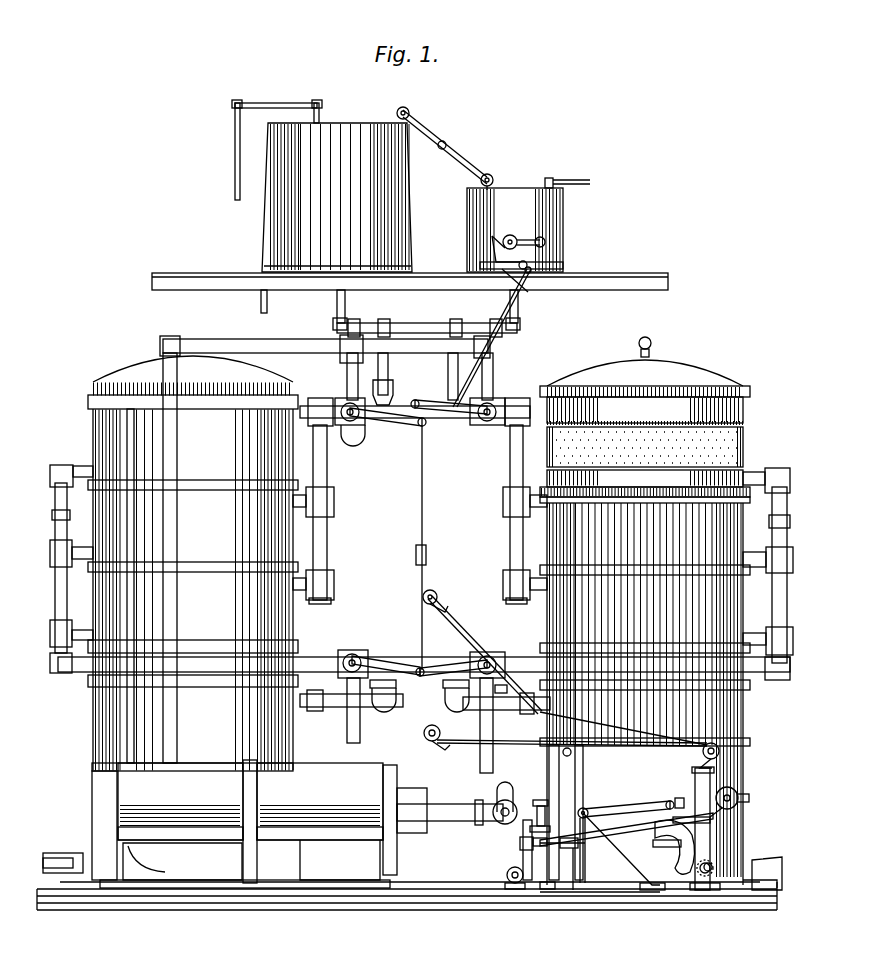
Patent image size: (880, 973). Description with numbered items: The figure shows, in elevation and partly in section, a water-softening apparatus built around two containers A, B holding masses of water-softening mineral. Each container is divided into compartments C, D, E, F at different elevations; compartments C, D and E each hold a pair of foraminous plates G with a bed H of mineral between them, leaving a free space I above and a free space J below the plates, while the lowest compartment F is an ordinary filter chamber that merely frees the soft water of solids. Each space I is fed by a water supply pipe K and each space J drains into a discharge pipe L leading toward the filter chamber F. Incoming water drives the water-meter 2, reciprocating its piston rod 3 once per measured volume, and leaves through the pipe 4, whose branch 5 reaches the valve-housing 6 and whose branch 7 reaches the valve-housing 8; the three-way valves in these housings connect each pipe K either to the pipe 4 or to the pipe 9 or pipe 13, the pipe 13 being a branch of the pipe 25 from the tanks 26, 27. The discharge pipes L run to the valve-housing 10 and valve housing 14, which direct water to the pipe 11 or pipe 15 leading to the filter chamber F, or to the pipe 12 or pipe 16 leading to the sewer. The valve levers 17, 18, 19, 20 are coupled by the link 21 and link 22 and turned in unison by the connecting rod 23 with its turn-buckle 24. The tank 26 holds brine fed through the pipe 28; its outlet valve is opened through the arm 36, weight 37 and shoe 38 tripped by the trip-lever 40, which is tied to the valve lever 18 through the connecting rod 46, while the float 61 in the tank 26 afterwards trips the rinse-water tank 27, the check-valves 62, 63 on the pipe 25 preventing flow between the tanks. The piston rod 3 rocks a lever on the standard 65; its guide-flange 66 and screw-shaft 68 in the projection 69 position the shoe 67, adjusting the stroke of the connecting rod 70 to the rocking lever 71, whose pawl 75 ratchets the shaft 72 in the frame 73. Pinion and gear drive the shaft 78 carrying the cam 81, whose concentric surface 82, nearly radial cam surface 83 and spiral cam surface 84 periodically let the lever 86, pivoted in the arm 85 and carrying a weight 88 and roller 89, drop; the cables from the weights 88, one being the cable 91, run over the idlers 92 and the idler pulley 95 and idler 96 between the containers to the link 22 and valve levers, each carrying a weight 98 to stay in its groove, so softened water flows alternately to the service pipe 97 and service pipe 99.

The water-meter 2 is at (248, 824).
The piston rod 3 is at (447, 822).
The pipe 4 is at (178, 722).
The branch 5 is at (346, 373).
The valve-housing 6 is at (360, 430).
The branch 7 is at (494, 385).
The valve-housing 8 is at (483, 426).
The pipe 9 is at (389, 380).
The valve-housing 10 is at (348, 655).
The pipe 11 is at (322, 708).
The pipe 12 is at (347, 735).
The pipe 13 is at (448, 370).
The valve housing 14 is at (502, 688).
The pipe 15 is at (510, 711).
The pipe 16 is at (480, 760).
The valve lever 17 is at (400, 419).
The valve lever 18 is at (436, 412).
The valve lever 19 is at (372, 660).
The valve lever 20 is at (434, 660).
The link 21 is at (415, 401).
The link 22 is at (350, 440).
The connecting rod 23 is at (423, 496).
The turn-buckle 24 is at (426, 557).
The pipe 25 is at (412, 325).
The tank 26 is at (562, 242).
The tank 27 is at (271, 246).
The pipe 28 is at (574, 172).
The arm 36 is at (512, 238).
The weight 37 is at (499, 240).
The shoe 38 is at (506, 272).
The trip-lever 40 is at (616, 746).
The connecting rod 46 is at (492, 350).
The float 61 is at (500, 824).
The check-valve 62 is at (518, 303).
The check-valve 63 is at (356, 321).
The standard 65 is at (513, 889).
The guide-flange 66 is at (507, 875).
The shoe 67 is at (520, 845).
The screw-shaft 68 is at (548, 889).
The projection 69 is at (538, 800).
The connecting rod 70 is at (628, 828).
The rocking lever 71 is at (712, 833).
The shaft 72 is at (700, 874).
The standard or frame 73 is at (697, 890).
The dog or pawl 75 is at (716, 865).
The shaft 78 is at (680, 848).
The cam 81 is at (666, 802).
The surface 82 is at (651, 890).
The cam surface 83 is at (718, 813).
The cam surface 84 is at (714, 840).
The arm 85 is at (622, 850).
The lever 86 is at (750, 798).
The weight 88 is at (738, 792).
The anti-friction roller 89 is at (679, 800).
The cable 91 is at (475, 642).
The idlers 92 is at (720, 750).
The idler pulley 95 is at (424, 736).
The idler 96 is at (436, 592).
The service pipe 97 is at (62, 853).
The weight 98 is at (566, 756).
The service pipe 99 is at (782, 882).
The container A is at (125, 380).
The container B is at (675, 370).
The compartment C is at (752, 438).
The compartment D is at (430, 526).
The compartment E is at (427, 602).
The filter chamber F is at (422, 721).
The foraminous plates G is at (632, 455).
The beds of mineral H is at (742, 420).
The free space I is at (679, 410).
The free space J is at (676, 485).
The water supply pipe K is at (512, 455).
The discharge pipe L is at (55, 597).